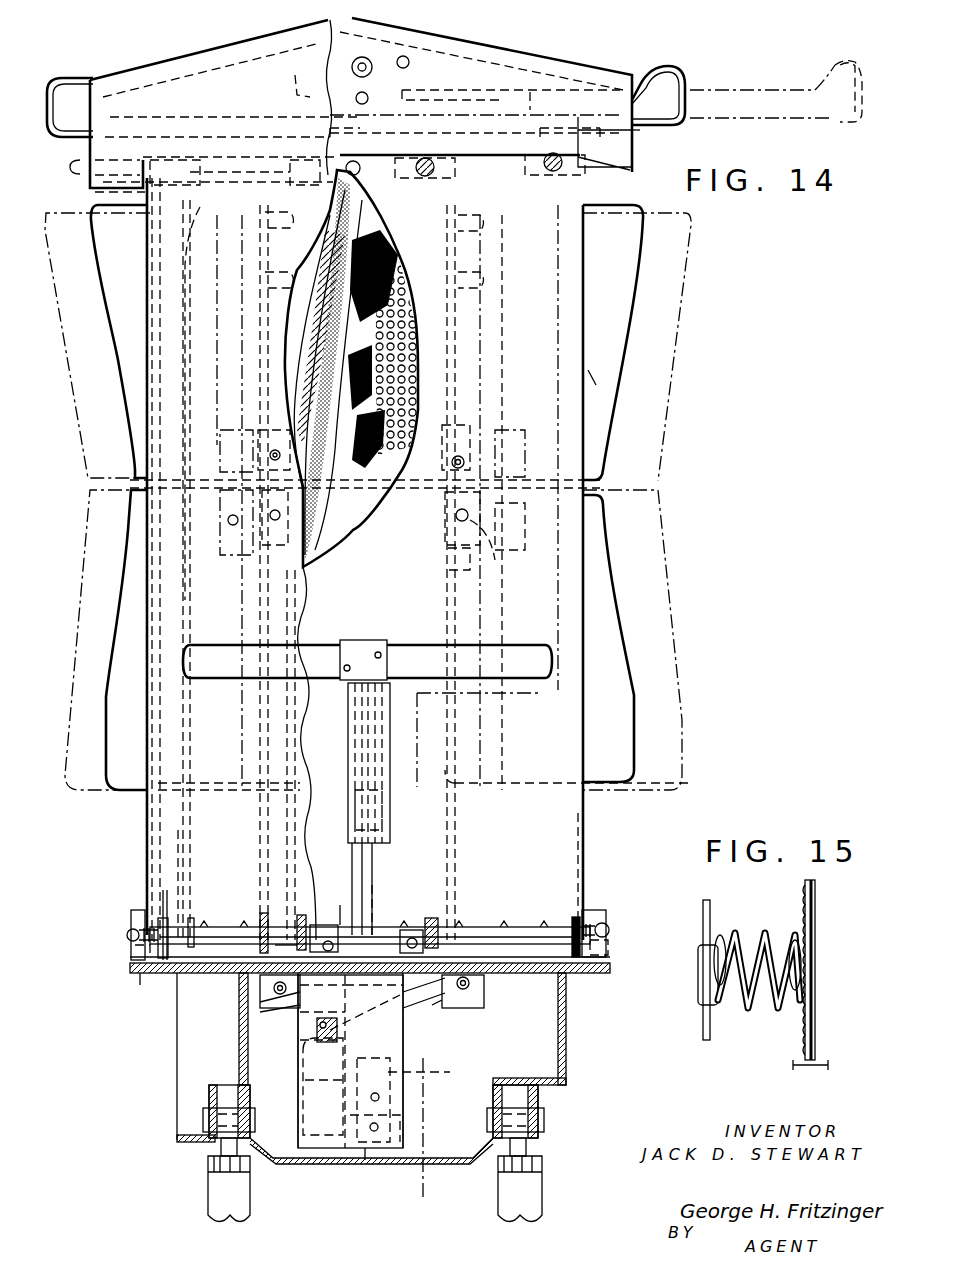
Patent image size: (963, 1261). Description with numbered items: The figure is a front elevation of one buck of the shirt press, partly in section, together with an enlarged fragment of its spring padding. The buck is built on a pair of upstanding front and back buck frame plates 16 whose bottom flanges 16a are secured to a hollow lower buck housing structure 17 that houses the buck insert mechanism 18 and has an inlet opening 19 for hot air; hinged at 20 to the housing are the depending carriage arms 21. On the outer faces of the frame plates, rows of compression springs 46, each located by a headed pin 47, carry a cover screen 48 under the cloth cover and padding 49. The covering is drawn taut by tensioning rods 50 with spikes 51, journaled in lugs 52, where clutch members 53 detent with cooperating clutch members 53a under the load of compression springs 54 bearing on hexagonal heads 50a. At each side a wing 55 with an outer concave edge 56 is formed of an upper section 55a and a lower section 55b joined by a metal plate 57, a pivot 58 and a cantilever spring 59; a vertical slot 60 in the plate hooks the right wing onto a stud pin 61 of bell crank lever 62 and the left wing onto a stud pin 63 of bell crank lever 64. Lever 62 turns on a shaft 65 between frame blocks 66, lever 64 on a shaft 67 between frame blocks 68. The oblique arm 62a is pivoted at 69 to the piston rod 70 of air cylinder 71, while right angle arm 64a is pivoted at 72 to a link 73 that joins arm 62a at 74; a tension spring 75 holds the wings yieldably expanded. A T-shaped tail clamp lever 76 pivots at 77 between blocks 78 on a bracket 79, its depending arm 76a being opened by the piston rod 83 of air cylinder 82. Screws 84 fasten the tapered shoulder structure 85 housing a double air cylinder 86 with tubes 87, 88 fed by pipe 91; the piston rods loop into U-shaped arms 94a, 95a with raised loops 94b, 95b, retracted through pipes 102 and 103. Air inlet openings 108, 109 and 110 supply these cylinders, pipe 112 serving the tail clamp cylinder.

In FIG. 14, the buck frame plate 16 is at (555, 188).
In FIG. 15, the buck frame plate 16 is at (703, 1040).
In FIG. 14, the flange 16a is at (198, 972).
In FIG. 14, the lower buck housing structure 17 is at (568, 985).
In FIG. 14, the buck insert mechanism 18 is at (407, 1090).
In FIG. 14, the inlet opening 19 is at (566, 1068).
In FIG. 14, the hinge 20 is at (252, 1110).
In FIG. 14, the carriage arm 21 is at (248, 1210).
In FIG. 14, the compression spring 46 is at (412, 318).
In FIG. 15, the compression spring 46 is at (748, 1020).
In FIG. 15, the headed pin 47 is at (698, 985).
In FIG. 14, the cover screen 48 is at (395, 245).
In FIG. 15, the cover screen 48 is at (800, 905).
In FIG. 15, the cover and padding 49 is at (810, 1067).
In FIG. 14, the tensioning rod 50 is at (212, 927).
In FIG. 14, the hexagonal head 50a is at (127, 935).
In FIG. 14, the spike 51 is at (245, 927).
In FIG. 14, the lug 52 is at (190, 930).
In FIG. 14, the clutch member 53 is at (302, 912).
In FIG. 14, the cooperating clutch member 53a is at (490, 882).
In FIG. 14, the compression spring 54 is at (135, 912).
In FIG. 14, the wing 55 is at (118, 372).
In FIG. 14, the upper wing section 55a is at (612, 388).
In FIG. 14, the lower wing section 55b is at (630, 590).
In FIG. 14, the outer concave edge 56 is at (612, 496).
In FIG. 14, the metal plate 57 is at (446, 558).
In FIG. 14, the pivot 58 is at (255, 422).
In FIG. 14, the cantilever spring 59 is at (263, 368).
In FIG. 14, the vertical slot 60 is at (496, 562).
In FIG. 14, the stud pin 61 is at (446, 515).
In FIG. 14, the bell crank lever 62 is at (480, 735).
In FIG. 14, the obliquely extending arm 62a is at (408, 1035).
In FIG. 14, the stud pin 63 is at (250, 560).
In FIG. 14, the bell crank lever 64 is at (265, 830).
In FIG. 14, the right angle arm 64a is at (322, 1005).
In FIG. 14, the shaft 65 is at (480, 1008).
In FIG. 14, the frame block 66 is at (445, 1006).
In FIG. 14, the shaft 67 is at (283, 1008).
In FIG. 14, the frame block 68 is at (240, 1018).
In FIG. 14, the pivot connection 69 is at (303, 1040).
In FIG. 14, the piston rod 70 is at (322, 1075).
In FIG. 14, the air cylinder 71 is at (302, 1150).
In FIG. 14, the pivot 72 is at (352, 991).
In FIG. 14, the link 73 is at (386, 1012).
In FIG. 14, the pivot connection 74 is at (324, 1042).
In FIG. 14, the tension spring 75 is at (378, 880).
In FIG. 14, the tail clamp lever 76 is at (412, 640).
In FIG. 14, the depending arm 76a is at (440, 1072).
In FIG. 14, the pivot 77 is at (380, 895).
In FIG. 14, the block 78 is at (366, 918).
In FIG. 14, the bracket 79 is at (340, 905).
In FIG. 14, the air cylinder 82 is at (395, 1136).
In FIG. 14, the piston rod 83 is at (365, 1160).
In FIG. 14, the screw 84 is at (305, 190).
In FIG. 14, the shoulder structure 85 is at (640, 152).
In FIG. 14, the double air cylinder 86 is at (420, 140).
In FIG. 14, the tube 87 is at (247, 117).
In FIG. 14, the tube 88 is at (495, 115).
In FIG. 14, the pipe 91 is at (190, 258).
In FIG. 14, the U-shaped arm 94a is at (284, 75).
In FIG. 14, the raised loop 94b is at (88, 76).
In FIG. 14, the U-shaped arm 95a is at (532, 92).
In FIG. 14, the raised loop 95b is at (672, 66).
In FIG. 14, the pipe 102 is at (560, 143).
In FIG. 14, the pipe 103 is at (95, 195).
In FIG. 14, the air inlet opening 108 is at (130, 966).
In FIG. 14, the air inlet opening 109 is at (132, 945).
In FIG. 14, the air inlet opening 110 is at (610, 947).
In FIG. 14, the air pipe 112 is at (142, 975).